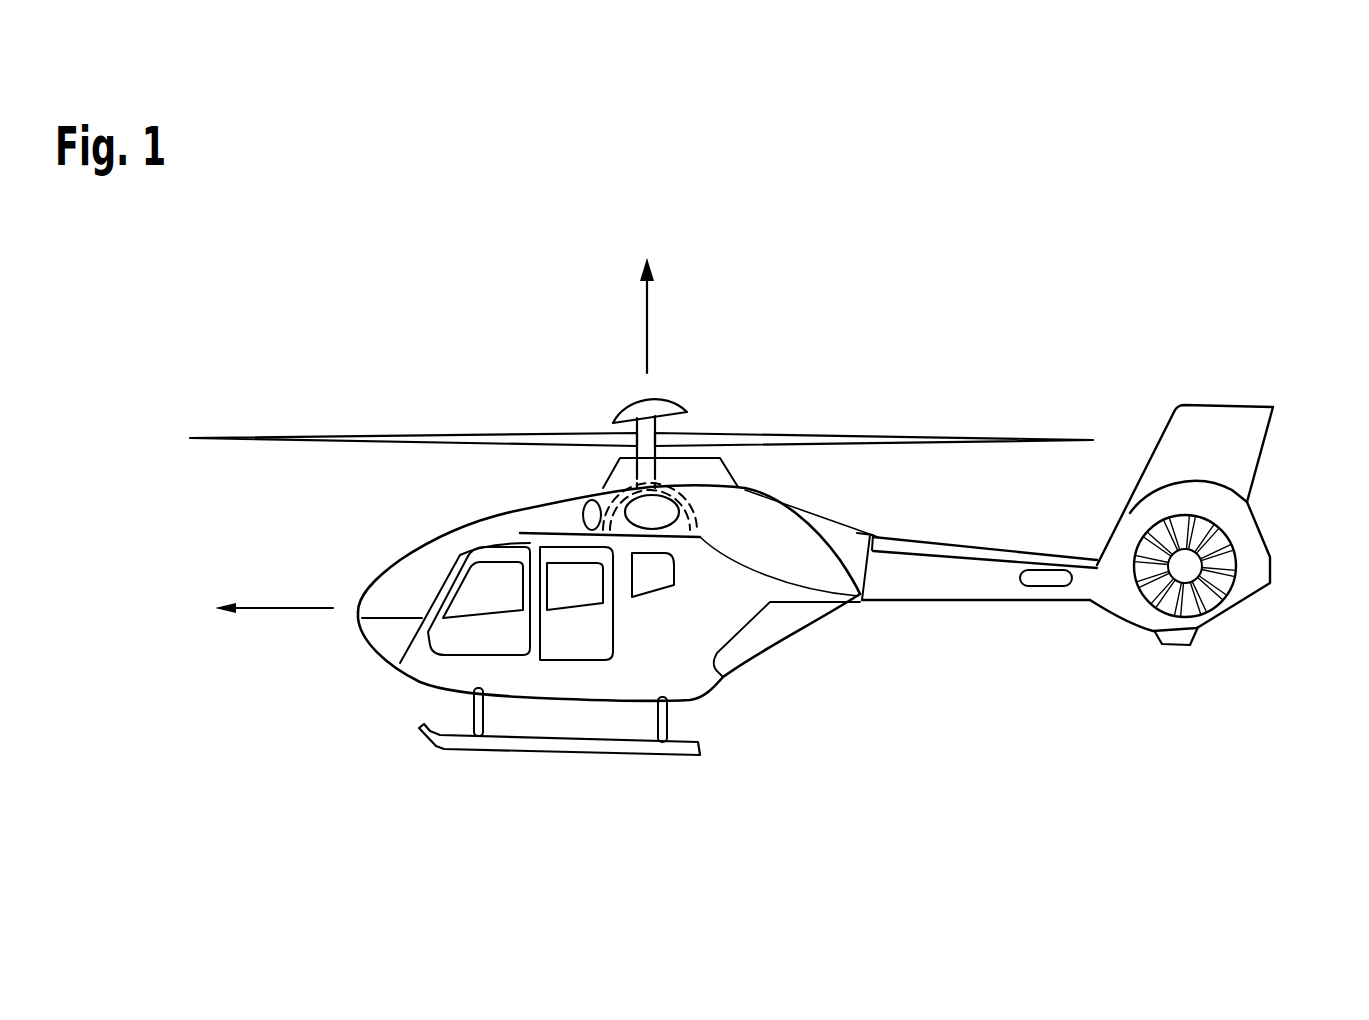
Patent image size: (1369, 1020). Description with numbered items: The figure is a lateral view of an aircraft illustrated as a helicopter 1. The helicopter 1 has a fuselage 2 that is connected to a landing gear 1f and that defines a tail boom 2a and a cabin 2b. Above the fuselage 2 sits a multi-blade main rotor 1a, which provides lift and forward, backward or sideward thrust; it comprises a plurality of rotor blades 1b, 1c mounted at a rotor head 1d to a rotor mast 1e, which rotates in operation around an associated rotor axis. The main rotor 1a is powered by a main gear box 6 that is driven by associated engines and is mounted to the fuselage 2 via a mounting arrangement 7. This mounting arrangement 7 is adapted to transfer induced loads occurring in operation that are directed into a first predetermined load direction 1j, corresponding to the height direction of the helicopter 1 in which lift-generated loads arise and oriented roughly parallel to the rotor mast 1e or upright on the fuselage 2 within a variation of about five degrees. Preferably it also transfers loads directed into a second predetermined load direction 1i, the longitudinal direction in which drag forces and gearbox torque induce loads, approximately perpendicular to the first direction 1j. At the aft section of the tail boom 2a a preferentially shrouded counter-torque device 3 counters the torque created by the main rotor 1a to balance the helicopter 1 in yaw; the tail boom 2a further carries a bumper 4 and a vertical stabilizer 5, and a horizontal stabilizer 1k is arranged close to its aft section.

The helicopter 1 is at (763, 535).
The main rotor 1a is at (657, 382).
The rotor blade 1b is at (413, 397).
The rotor blade 1c is at (890, 390).
The rotor head 1d is at (607, 387).
The rotor mast 1e is at (547, 461).
The landing gear 1f is at (559, 755).
The second predetermined load direction 1i is at (274, 641).
The first predetermined load direction 1j is at (593, 315).
The horizontal stabilizer 1k is at (1051, 523).
The fuselage 2 is at (844, 582).
The tail boom 2a is at (979, 578).
The cabin 2b is at (513, 585).
The counter-torque device 3 is at (1213, 556).
The bumper 4 is at (1176, 680).
The vertical stabilizer 5 is at (1216, 485).
The main gear box 6 is at (684, 436).
The mounting arrangement 7 is at (726, 493).